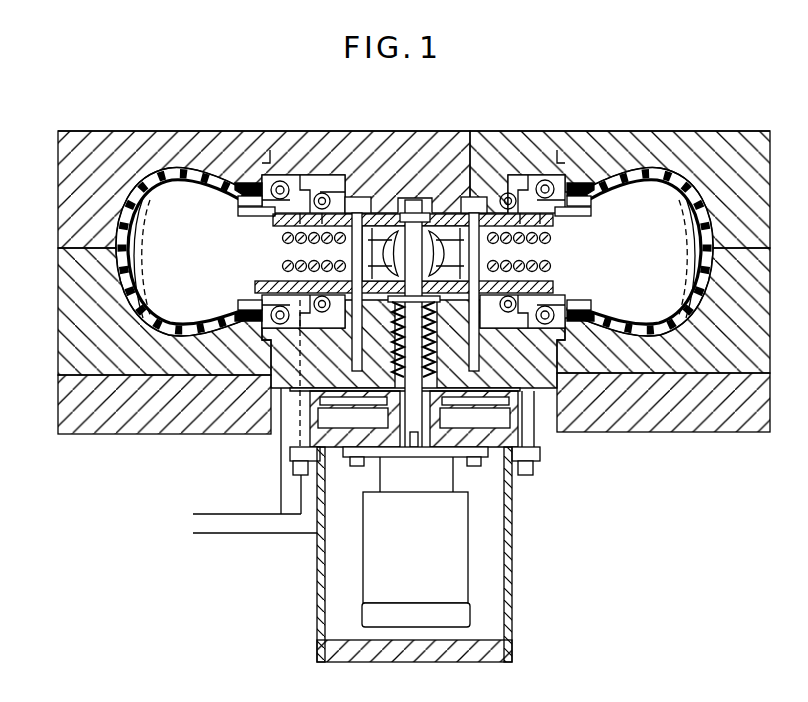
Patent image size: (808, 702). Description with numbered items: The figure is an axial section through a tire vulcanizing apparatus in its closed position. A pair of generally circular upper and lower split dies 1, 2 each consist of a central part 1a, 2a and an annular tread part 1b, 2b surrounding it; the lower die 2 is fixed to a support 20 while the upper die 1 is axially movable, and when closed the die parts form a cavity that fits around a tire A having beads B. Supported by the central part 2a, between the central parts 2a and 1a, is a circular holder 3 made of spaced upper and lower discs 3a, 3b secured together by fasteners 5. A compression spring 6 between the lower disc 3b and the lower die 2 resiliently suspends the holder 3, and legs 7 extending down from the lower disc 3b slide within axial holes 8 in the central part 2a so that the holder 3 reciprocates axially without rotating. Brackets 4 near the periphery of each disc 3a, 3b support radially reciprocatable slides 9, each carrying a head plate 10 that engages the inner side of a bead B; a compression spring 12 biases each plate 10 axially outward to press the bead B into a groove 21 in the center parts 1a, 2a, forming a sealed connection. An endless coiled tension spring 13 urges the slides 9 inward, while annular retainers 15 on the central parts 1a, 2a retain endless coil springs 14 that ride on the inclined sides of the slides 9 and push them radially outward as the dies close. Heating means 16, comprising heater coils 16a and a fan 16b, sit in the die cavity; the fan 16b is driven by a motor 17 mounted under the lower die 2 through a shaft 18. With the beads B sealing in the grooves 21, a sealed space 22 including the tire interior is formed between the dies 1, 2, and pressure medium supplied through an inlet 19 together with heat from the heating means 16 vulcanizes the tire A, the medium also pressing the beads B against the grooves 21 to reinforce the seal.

The upper split die 1 is at (50, 191).
The central part of upper die 1a is at (527, 135).
The annular tread part of upper die 1b is at (190, 132).
The lower split die 2 is at (46, 314).
The central part of lower die 2a is at (562, 345).
The annular tread part of lower die 2b is at (60, 356).
The circular holder 3 is at (388, 210).
The upper holder disc 3a is at (555, 224).
The lower holder disc 3b is at (557, 288).
The bracket 4 is at (301, 198).
The fastener 5 is at (498, 254).
The compression spring 6 is at (516, 460).
The leg 7 is at (563, 312).
The axial hole 8 is at (527, 452).
The slide 9 is at (245, 214).
The head plate 10 is at (246, 205).
The compression spring 12 is at (582, 200).
The endless coiled tension spring 13 is at (284, 186).
The endless coil spring 14 is at (323, 192).
The annular retainer 15 is at (346, 213).
The heating means 16 is at (275, 256).
The heater coil 16a is at (548, 268).
The fan 16b is at (452, 238).
The motor 17 is at (414, 553).
The shaft 18 is at (410, 418).
The inlet 19 is at (292, 392).
The support 20 is at (130, 428).
The groove 21 is at (248, 186).
The sealed space 22 is at (678, 258).
The tire A is at (112, 238).
The bead B is at (245, 306).